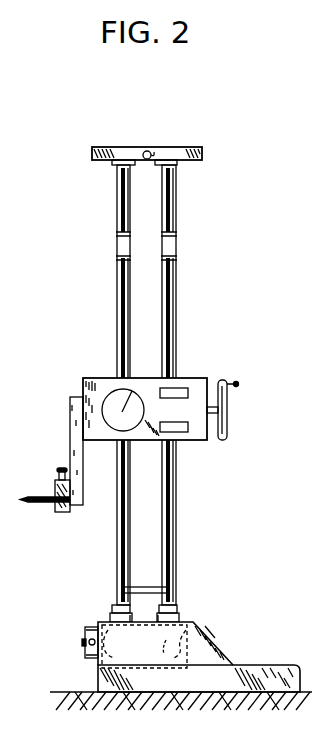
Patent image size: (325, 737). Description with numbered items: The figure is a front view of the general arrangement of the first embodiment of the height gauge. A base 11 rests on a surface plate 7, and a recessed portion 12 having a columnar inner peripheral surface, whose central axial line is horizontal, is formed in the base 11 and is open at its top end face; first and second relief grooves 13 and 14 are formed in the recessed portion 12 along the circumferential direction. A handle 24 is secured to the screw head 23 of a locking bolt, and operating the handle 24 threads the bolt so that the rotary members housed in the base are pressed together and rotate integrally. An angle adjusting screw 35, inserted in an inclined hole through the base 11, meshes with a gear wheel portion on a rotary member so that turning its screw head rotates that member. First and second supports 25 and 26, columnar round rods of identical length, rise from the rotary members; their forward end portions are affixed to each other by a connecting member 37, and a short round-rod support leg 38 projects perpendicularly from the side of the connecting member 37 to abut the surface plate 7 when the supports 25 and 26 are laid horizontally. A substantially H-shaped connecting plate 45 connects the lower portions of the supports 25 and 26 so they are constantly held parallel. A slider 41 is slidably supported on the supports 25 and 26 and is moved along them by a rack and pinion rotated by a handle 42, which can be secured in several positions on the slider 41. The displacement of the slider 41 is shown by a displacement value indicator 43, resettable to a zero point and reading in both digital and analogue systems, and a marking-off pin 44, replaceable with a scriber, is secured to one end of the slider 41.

The surface plate 7 is at (58, 692).
The base 11 is at (270, 672).
The recessed portion 12 is at (205, 652).
The first relief groove 13 is at (108, 620).
The second relief groove 14 is at (192, 625).
The screw head 23 is at (85, 630).
The handle 24 is at (86, 645).
The first support 25 is at (122, 302).
The second support 26 is at (168, 302).
The angle adjusting screw 35 is at (147, 612).
The connecting member 37 is at (198, 148).
The support leg 38 is at (155, 151).
The slider 41 is at (95, 378).
The handle 42 is at (229, 431).
The displacement value indicator 43 is at (165, 392).
The marking-off pin 44 is at (30, 497).
The connecting plate 45 is at (128, 585).